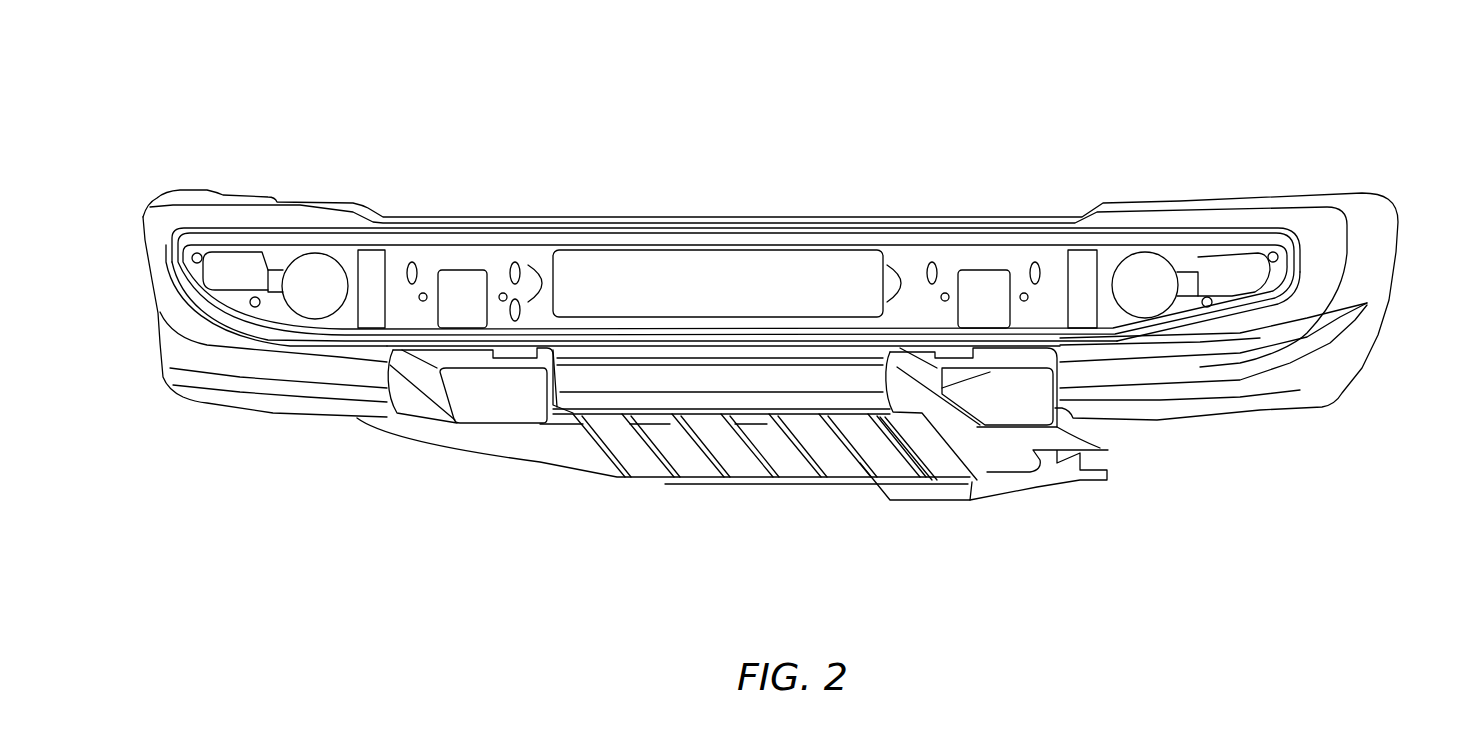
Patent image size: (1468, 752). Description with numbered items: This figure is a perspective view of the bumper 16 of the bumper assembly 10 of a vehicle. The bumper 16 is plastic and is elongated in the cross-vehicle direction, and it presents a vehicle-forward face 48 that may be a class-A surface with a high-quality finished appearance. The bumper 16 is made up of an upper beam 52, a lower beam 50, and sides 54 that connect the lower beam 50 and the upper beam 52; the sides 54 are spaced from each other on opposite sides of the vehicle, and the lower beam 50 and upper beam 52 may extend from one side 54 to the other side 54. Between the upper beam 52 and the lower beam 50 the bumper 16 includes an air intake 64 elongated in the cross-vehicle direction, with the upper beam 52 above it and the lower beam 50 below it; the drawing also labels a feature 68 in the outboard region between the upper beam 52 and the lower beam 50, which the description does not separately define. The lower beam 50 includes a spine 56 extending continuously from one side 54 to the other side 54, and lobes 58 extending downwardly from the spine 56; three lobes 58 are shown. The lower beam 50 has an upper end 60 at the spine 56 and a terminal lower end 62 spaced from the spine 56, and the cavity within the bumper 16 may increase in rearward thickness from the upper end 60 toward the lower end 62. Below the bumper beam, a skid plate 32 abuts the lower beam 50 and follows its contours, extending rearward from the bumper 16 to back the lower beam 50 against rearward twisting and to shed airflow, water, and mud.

The bumper assembly 10 is at (1336, 117).
The bumper 16 is at (1382, 310).
The skid plate 32 is at (738, 462).
The vehicle-forward face 48 is at (297, 390).
The lower beam 50 is at (683, 380).
The upper beam 52 is at (805, 233).
The sides 54 is at (162, 280).
The spine 56 is at (673, 330).
The lobes 58 is at (323, 408).
The upper end 60 is at (712, 322).
The lower end 62 is at (706, 418).
The air intake 64 is at (607, 290).
The tail lamp pocket 68 is at (323, 282).